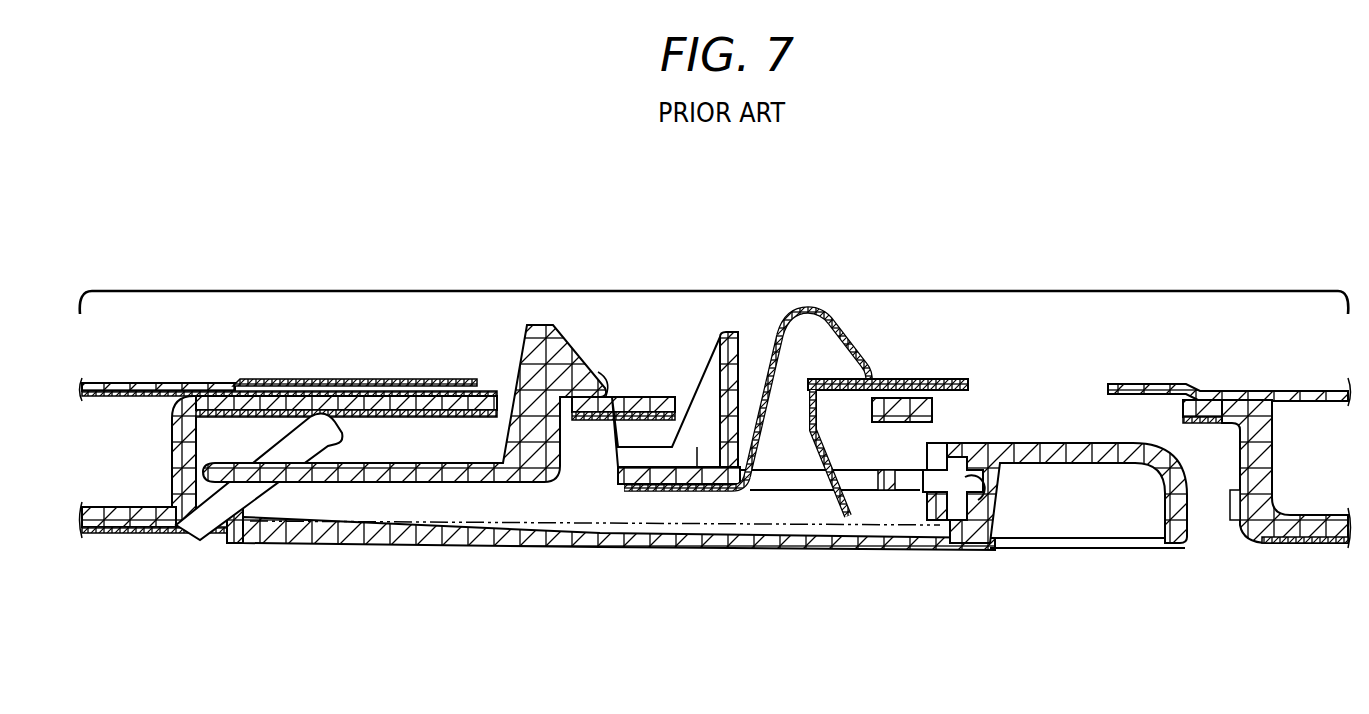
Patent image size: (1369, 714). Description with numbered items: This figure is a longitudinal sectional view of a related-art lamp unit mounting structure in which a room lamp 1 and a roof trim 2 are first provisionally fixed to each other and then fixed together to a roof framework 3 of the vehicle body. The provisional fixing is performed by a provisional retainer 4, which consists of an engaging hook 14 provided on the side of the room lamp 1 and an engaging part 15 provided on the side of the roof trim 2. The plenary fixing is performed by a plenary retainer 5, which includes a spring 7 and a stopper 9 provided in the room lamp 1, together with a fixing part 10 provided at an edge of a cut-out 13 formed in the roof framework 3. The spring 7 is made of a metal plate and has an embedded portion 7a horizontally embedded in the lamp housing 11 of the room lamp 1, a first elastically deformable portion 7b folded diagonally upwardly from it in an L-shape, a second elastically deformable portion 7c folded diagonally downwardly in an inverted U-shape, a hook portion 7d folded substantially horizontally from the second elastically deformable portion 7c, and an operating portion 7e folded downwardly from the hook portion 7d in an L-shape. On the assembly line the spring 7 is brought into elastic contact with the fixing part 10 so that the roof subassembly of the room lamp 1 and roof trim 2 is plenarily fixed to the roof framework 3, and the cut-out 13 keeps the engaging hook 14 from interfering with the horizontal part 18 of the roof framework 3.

The room lamp 1 is at (447, 550).
The roof trim 2 is at (133, 545).
The roof framework 3 is at (1012, 290).
The provisional retainer 4 is at (588, 338).
The plenary retainer 5 is at (796, 414).
The spring 7 is at (862, 333).
The embedded portion 7a is at (698, 498).
The first elastically deformable portion 7b is at (767, 404).
The second elastically deformable portion 7c is at (868, 358).
The hook portion 7d is at (860, 402).
The operating portion 7e is at (833, 514).
The stopper 9 is at (724, 332).
The fixing part 10 is at (832, 394).
The lamp housing 11 is at (665, 494).
The cut-out 13 is at (478, 379).
The engaging hook 14 is at (594, 377).
The engaging part 15 is at (577, 412).
The horizontal part 18 is at (362, 378).